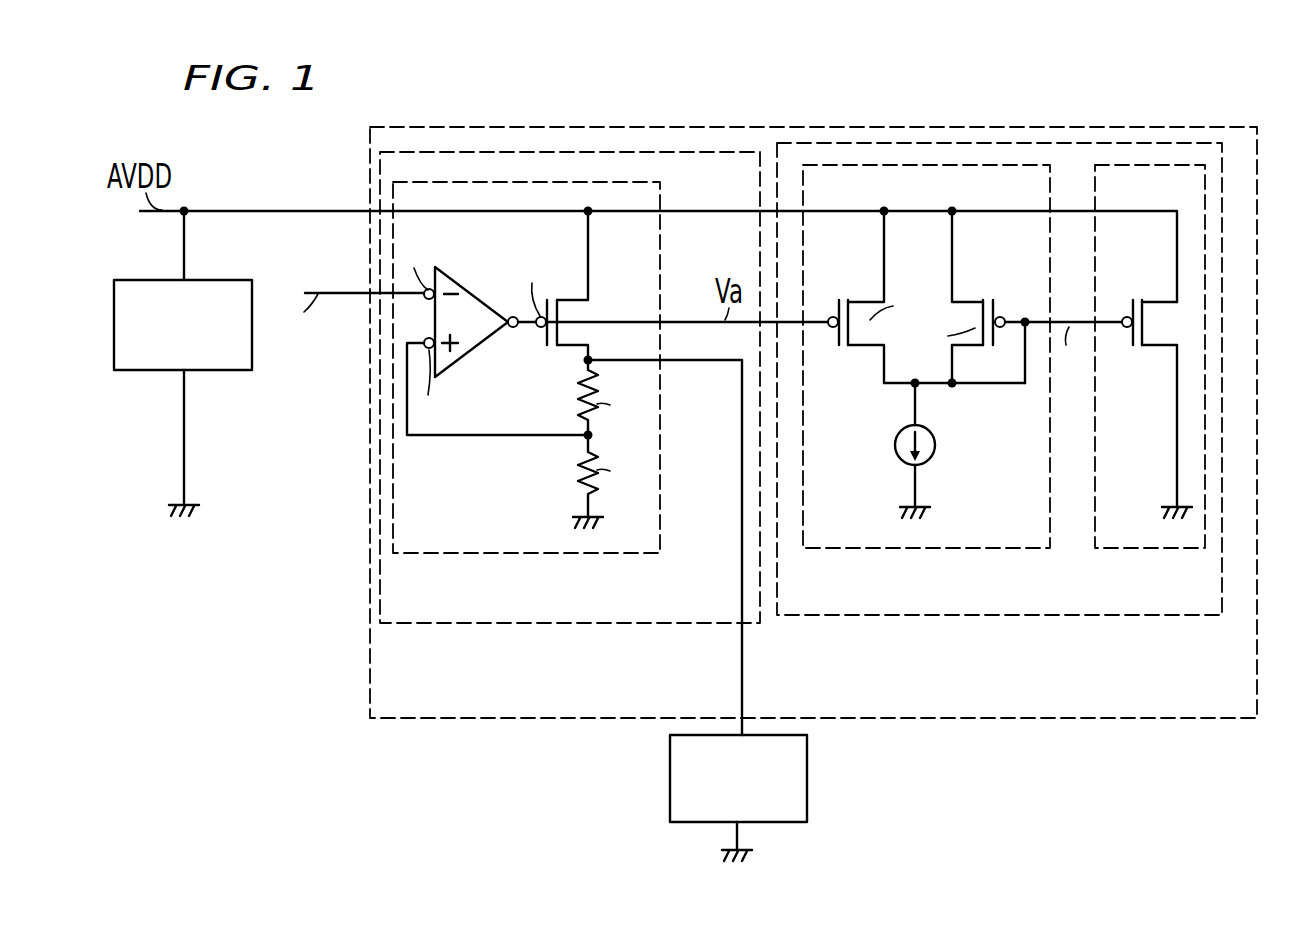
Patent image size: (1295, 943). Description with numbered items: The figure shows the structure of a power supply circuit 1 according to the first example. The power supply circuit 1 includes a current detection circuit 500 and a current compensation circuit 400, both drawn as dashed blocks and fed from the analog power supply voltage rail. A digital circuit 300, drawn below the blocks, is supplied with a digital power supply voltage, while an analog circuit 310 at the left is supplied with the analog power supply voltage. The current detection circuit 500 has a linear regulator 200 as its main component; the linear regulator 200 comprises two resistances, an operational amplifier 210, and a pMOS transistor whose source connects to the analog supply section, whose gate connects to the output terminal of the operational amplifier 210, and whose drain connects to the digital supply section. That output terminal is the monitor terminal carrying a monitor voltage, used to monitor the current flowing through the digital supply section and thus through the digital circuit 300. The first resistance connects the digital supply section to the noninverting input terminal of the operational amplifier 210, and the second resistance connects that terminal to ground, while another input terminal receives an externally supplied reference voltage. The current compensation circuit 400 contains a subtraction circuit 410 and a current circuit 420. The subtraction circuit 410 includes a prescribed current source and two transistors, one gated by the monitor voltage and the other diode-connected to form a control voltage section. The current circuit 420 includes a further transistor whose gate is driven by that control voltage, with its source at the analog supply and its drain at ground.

The power supply circuit 1 is at (386, 720).
The linear regulator 200 is at (549, 458).
The operational amplifier 210 is at (470, 292).
The digital circuit 300 is at (682, 825).
The analog circuit 310 is at (218, 372).
The current compensation circuit 400 is at (999, 424).
The subtraction circuit 410 is at (958, 553).
The current circuit 420 is at (1138, 552).
The current detection circuit 500 is at (563, 626).